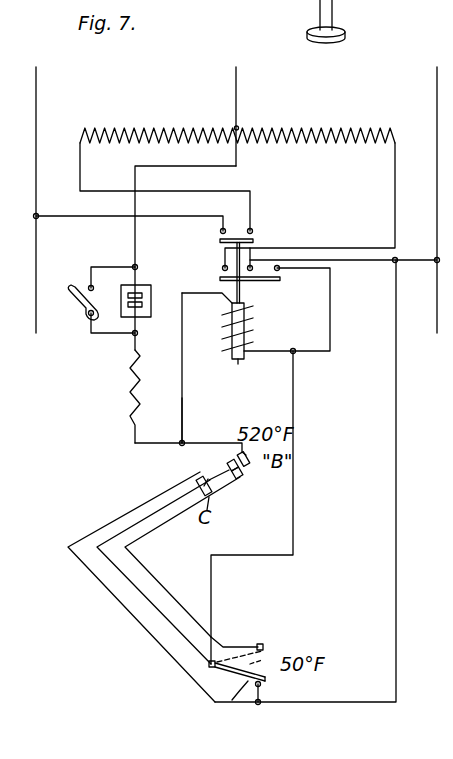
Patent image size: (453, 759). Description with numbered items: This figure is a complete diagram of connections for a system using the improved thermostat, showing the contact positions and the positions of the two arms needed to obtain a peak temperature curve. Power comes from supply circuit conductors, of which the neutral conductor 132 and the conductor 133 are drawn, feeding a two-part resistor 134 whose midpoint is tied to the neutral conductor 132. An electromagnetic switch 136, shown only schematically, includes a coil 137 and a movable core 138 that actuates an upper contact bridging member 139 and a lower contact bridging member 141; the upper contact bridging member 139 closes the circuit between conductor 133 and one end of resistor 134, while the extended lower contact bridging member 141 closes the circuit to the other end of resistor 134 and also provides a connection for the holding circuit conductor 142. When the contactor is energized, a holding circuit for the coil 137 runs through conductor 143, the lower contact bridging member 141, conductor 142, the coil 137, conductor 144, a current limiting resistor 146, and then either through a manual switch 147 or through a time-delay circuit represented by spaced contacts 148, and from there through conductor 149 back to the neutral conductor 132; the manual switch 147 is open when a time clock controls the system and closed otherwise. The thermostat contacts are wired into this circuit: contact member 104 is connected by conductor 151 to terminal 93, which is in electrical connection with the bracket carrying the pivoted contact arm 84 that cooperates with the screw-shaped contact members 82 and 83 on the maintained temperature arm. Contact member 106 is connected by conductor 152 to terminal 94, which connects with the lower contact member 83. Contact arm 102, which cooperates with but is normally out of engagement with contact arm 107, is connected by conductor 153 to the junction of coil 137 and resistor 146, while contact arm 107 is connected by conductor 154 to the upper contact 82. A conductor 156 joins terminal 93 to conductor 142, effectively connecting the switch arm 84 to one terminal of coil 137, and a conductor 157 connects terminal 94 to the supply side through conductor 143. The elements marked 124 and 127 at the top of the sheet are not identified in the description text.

The contact member 82 is at (275, 639).
The contact member 83 is at (262, 688).
The contact arm 84 is at (232, 700).
The terminal 93 is at (208, 669).
The terminal 94 is at (256, 705).
The contact arm 102 is at (248, 456).
The contact arm 104 is at (198, 481).
The contact arm 106 is at (210, 493).
The contact arm 107 is at (238, 479).
The valve stem 124 is at (334, 16).
The valve member 127 is at (297, 0).
The supply circuit conductor 132 is at (237, 98).
The supply circuit conductor 133 is at (37, 97).
The resistor 134 is at (134, 128).
The electromagnetic switch 136 is at (297, 335).
The coil 137 is at (230, 334).
The movable core 138 is at (239, 362).
The upper contact bridging member 139 is at (255, 239).
The lower contact bridging member 141 is at (264, 281).
The holding circuit conductor 142 is at (332, 321).
The conductor 143 is at (368, 263).
The conductor 144 is at (184, 399).
The current limiting resistor 146 is at (130, 381).
The manual switch 147 is at (88, 319).
The contacts 148 is at (163, 278).
The conductor 149 is at (221, 167).
The conductor 151 is at (140, 599).
The conductor 152 is at (108, 523).
The conductor 153 is at (206, 439).
The conductor 154 is at (171, 567).
The conductor 156 is at (296, 493).
The conductor 157 is at (395, 576).